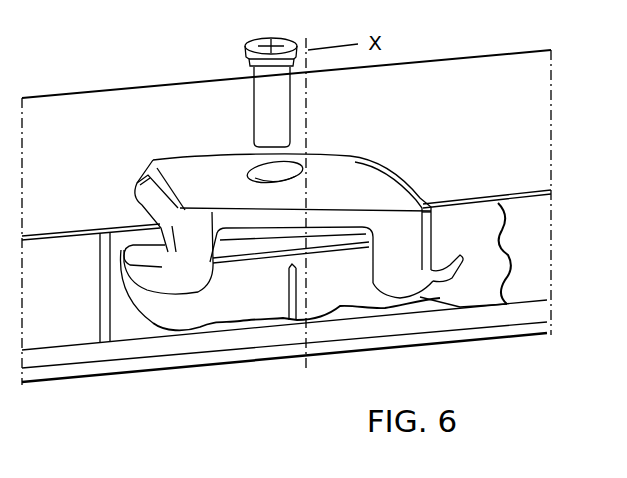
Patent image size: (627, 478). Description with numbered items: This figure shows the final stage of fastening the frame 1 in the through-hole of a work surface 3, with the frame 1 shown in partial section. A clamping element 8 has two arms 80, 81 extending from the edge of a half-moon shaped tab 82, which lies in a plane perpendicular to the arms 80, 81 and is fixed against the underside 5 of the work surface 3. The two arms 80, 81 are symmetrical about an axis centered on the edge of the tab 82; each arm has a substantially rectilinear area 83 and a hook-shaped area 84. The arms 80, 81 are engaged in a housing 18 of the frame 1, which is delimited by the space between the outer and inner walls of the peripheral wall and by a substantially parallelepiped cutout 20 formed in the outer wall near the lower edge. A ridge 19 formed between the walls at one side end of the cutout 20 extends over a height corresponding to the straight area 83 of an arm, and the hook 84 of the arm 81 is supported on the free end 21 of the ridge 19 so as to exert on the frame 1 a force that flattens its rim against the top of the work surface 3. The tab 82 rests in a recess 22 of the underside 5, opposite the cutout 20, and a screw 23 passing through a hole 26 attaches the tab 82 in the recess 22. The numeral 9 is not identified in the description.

The frame 1 is at (537, 257).
The work surface 3 is at (68, 137).
The underside 5 is at (490, 123).
The clamping element 8 is at (277, 221).
The panel edge 9 is at (527, 183).
The housing 18 is at (313, 275).
The ridge 19 is at (428, 247).
The cutout 20 is at (329, 259).
The free end 21 is at (442, 262).
The recess 22 is at (143, 190).
The screw 23 is at (261, 113).
The hole 26 is at (260, 170).
The first arm 80 is at (168, 317).
The second arm 81 is at (431, 309).
The tab 82 is at (283, 152).
The rectilinear area 83 is at (210, 260).
The hook-shaped area 84 is at (202, 268).